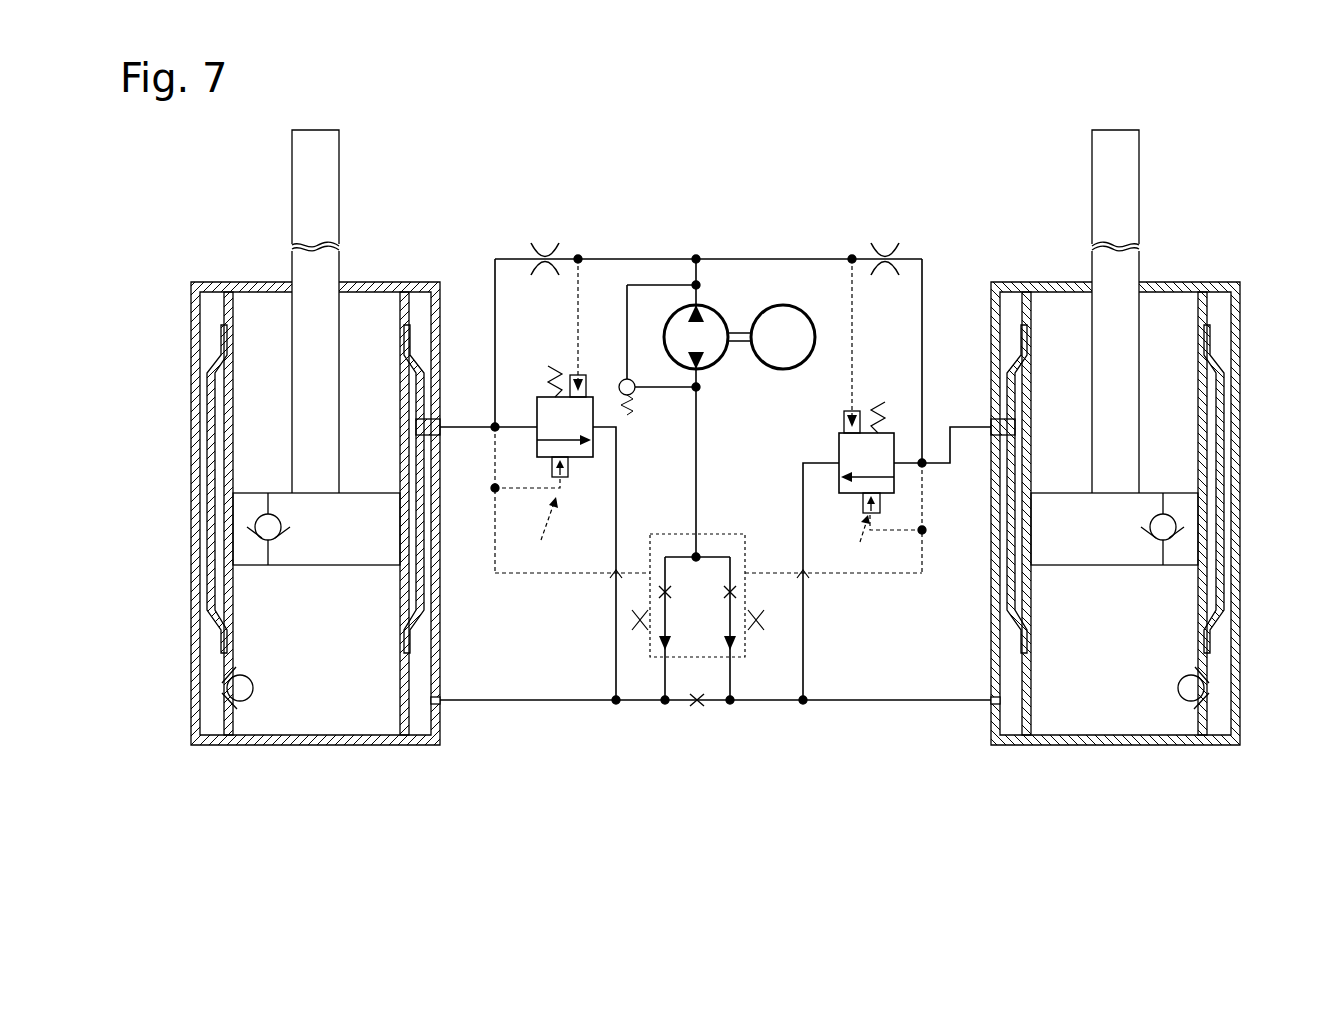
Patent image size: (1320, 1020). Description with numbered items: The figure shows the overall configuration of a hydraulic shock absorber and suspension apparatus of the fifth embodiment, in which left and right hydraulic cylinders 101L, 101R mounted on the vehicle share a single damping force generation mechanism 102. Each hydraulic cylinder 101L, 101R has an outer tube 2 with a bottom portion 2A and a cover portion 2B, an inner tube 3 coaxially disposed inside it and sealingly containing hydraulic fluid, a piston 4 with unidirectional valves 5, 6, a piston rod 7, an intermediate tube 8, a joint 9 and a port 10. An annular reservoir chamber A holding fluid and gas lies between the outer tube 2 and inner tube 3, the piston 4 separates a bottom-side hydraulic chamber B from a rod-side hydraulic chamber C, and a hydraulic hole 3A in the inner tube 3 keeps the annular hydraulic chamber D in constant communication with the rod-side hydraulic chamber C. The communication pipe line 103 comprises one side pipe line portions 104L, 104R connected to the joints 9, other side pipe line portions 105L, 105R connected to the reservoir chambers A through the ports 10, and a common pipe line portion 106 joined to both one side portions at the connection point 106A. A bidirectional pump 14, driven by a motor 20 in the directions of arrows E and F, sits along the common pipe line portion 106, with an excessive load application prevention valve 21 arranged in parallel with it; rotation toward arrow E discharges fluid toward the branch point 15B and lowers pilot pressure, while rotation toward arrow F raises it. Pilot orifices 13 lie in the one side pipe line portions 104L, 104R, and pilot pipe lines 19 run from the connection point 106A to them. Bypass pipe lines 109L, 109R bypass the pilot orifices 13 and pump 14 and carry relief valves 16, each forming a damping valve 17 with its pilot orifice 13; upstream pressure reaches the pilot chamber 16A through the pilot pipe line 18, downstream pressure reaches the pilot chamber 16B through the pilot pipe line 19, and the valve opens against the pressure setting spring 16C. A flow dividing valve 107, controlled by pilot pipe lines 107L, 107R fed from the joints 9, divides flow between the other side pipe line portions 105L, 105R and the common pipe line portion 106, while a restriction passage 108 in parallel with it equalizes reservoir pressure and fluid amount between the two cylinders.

The outer tube 2 is at (198, 358).
The bottom portion 2A is at (303, 746).
The cover portion 2B is at (380, 282).
The inner tube 3 is at (226, 410).
The hydraulic hole 3A is at (413, 375).
The piston 4 is at (323, 556).
The unidirectional valve 5 is at (268, 535).
The unidirectional valve 6 is at (236, 692).
The piston rod 7 is at (330, 158).
The intermediate tube 8 is at (206, 512).
The joint 9 is at (442, 426).
The port 10 is at (442, 704).
The pilot orifice 13 is at (545, 246).
The pump 14 is at (718, 357).
The branch point 15B is at (616, 702).
The relief valve 16 is at (594, 450).
The pilot chamber 16A is at (563, 478).
The pilot chamber 16B is at (585, 383).
The pressure setting spring 16C is at (547, 372).
The damping valve 17 is at (700, 535).
The pilot pipe line 18 is at (496, 488).
The pilot pipe line 19 is at (576, 350).
The motor 20 is at (812, 312).
The excessive load application prevention valve 21 is at (632, 400).
The left hydraulic cylinder 101L is at (253, 266).
The right hydraulic cylinder 101R is at (1167, 266).
The damping force generation mechanism 102 is at (654, 236).
The communication pipe line 103 is at (753, 250).
The one side pipe line portion 104L is at (495, 258).
The one side pipe line portion 104R is at (922, 258).
The other side pipe line portion 105L is at (540, 702).
The other side pipe line portion 105R is at (886, 702).
The common pipe line portion 106 is at (698, 455).
The connection point 106A is at (696, 258).
The flow dividing valve 107 is at (715, 532).
The pilot pipe line 107L is at (548, 575).
The pilot pipe line 107R is at (812, 575).
The restriction passage 108 is at (697, 706).
The bypass pipe line 109L is at (617, 530).
The bypass pipe line 109R is at (803, 466).
The reservoir chamber A is at (420, 644).
The bottom-side hydraulic chamber B is at (322, 672).
The rod-side hydraulic chamber C is at (372, 422).
The annular hydraulic chamber D is at (214, 448).
The arrow (normal rotation direction) E is at (676, 300).
The arrow (reverse rotation direction) F is at (678, 372).